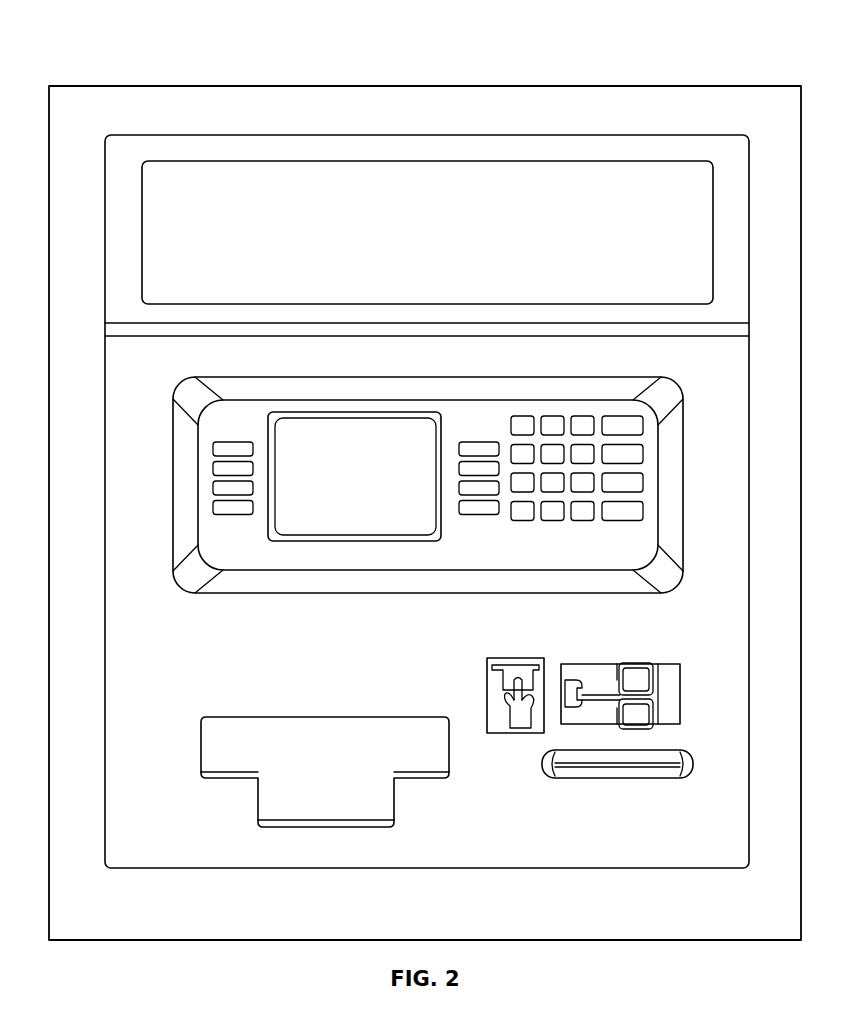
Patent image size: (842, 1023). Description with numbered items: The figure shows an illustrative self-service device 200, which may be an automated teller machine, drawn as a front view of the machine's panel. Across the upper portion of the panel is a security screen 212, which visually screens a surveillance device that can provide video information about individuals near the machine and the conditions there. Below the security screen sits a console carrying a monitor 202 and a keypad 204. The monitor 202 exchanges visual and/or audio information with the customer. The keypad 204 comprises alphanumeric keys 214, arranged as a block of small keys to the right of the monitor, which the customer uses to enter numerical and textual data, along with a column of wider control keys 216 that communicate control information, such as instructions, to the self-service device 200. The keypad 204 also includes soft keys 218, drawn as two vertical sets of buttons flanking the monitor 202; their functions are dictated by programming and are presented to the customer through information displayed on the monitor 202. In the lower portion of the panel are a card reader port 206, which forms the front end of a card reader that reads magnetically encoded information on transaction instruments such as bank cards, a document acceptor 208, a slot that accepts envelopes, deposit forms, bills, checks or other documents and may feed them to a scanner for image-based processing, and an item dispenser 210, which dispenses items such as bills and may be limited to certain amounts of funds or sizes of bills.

The self-service device 200 is at (103, 55).
The monitor 202 is at (382, 414).
The keypad 204 is at (472, 553).
The card reader port 206 is at (666, 664).
The document acceptor 208 is at (678, 750).
The item dispenser 210 is at (224, 717).
The security screen 212 is at (640, 161).
The alphanumeric keys 214 is at (525, 522).
The control keys 216 is at (628, 410).
The soft keys 218 is at (238, 432).